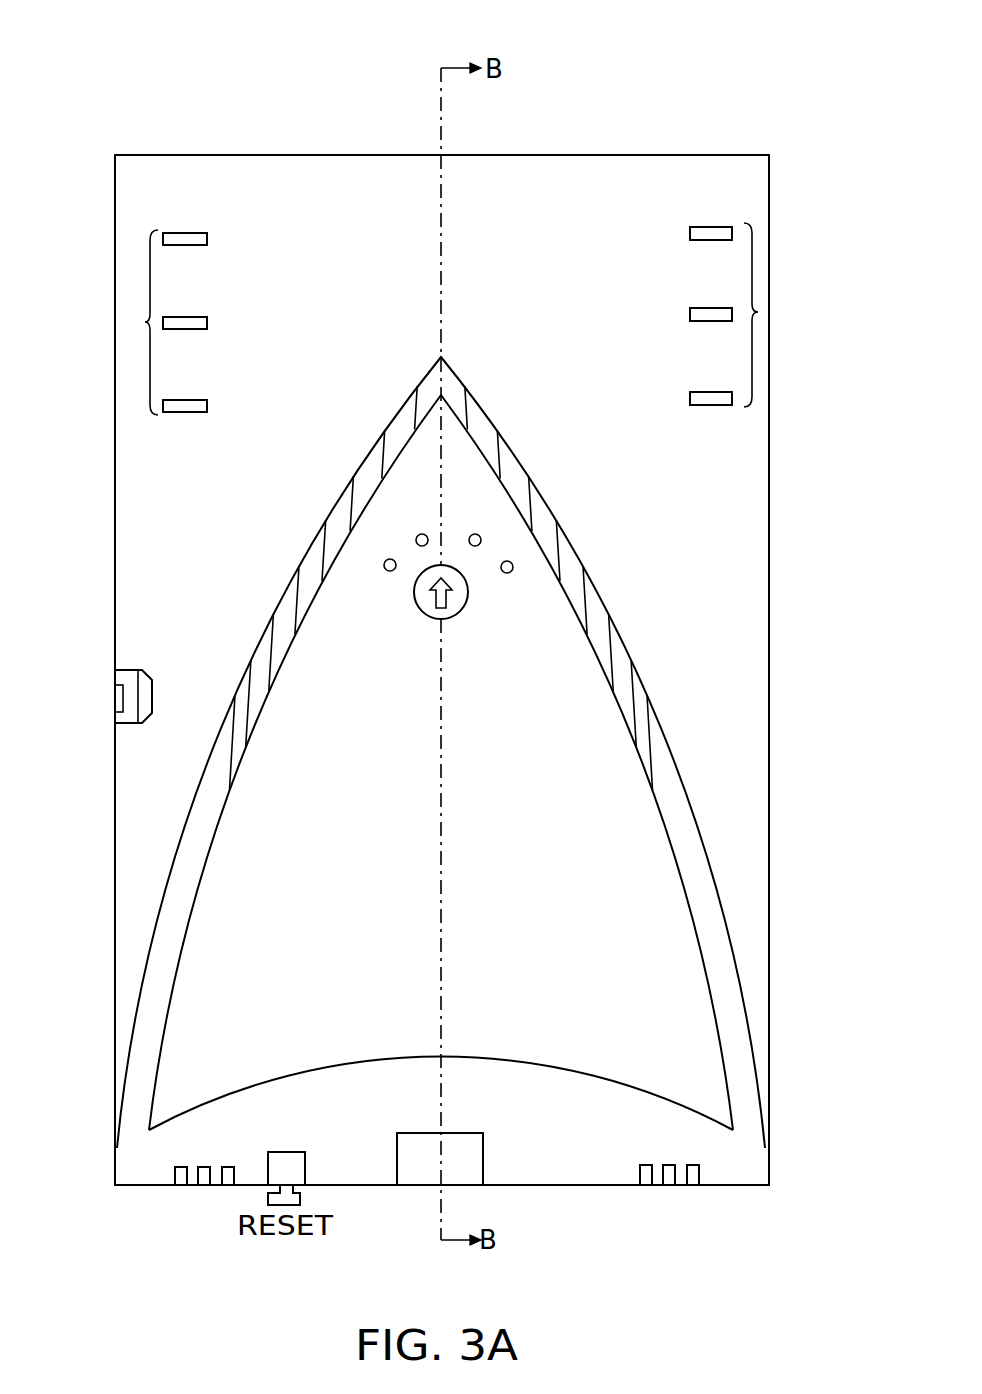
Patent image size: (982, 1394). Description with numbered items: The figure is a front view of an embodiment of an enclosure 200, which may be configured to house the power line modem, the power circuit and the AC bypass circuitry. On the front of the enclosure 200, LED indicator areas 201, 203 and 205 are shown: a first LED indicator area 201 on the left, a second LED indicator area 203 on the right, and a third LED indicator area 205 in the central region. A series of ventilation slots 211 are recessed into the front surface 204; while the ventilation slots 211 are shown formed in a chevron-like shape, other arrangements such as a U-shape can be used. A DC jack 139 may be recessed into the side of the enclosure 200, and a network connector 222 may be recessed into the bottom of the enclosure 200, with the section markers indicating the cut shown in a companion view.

The enclosure 200 is at (579, 82).
The LED indicator area 201 is at (145, 322).
The LED indicator area 203 is at (758, 312).
The front surface 204 is at (770, 558).
The LED indicator area 205 is at (517, 709).
The ventilation slots 211 is at (590, 577).
The RJ-45 port 222 is at (462, 1133).
The DC jack 139 is at (113, 680).